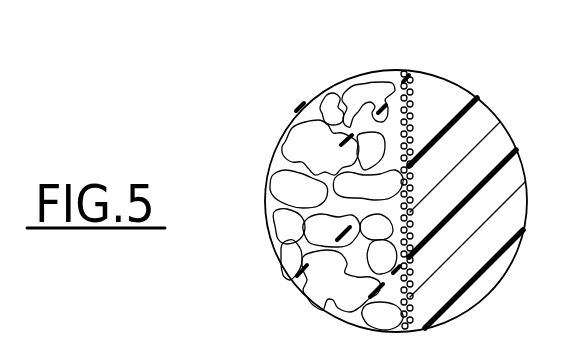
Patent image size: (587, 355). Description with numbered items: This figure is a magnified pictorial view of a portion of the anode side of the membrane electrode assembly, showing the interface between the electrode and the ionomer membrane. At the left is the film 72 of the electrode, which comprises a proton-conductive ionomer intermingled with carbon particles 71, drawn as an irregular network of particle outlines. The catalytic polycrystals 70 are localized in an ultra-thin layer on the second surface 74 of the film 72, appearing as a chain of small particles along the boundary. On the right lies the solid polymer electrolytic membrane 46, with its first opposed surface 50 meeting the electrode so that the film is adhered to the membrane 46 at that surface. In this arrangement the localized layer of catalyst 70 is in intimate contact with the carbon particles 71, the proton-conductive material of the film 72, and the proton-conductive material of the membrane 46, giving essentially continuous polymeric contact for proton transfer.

The solid polymer electrolytic membrane 46 is at (482, 108).
The first opposed surface 50 is at (427, 328).
The catalytic polycrystals 70 is at (417, 140).
The carbon particles 71 is at (312, 217).
The film 72 is at (292, 113).
The second surface of the film 74 is at (425, 250).